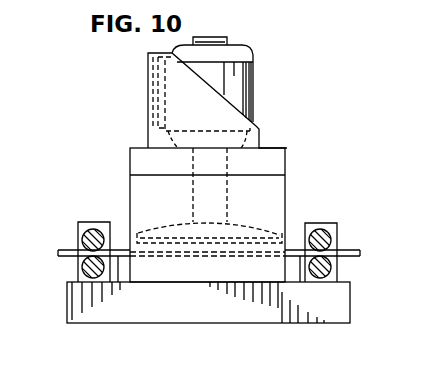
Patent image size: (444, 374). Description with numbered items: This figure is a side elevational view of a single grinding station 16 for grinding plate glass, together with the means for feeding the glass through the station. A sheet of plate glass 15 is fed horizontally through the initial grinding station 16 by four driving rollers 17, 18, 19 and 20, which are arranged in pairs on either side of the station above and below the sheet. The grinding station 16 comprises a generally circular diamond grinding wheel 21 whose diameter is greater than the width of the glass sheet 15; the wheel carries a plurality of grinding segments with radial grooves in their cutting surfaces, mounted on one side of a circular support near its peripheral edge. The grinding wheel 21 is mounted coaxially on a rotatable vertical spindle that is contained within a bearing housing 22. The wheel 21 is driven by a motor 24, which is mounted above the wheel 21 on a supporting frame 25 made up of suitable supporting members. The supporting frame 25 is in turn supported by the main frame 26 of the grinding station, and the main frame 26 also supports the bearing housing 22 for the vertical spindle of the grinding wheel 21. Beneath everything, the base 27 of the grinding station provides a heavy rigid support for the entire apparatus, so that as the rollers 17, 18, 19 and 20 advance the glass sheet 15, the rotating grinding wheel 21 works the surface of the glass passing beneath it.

The sheet of plate glass 15 is at (72, 252).
The grinding station 16 is at (274, 141).
The driving roller 17 is at (344, 228).
The driving roller 18 is at (315, 205).
The driving roller 19 is at (91, 229).
The driving roller 20 is at (82, 268).
The diamond grinding wheel 21 is at (243, 227).
The bearing housing 22 is at (192, 197).
The motor 24 is at (244, 56).
The supporting frame 25 is at (148, 91).
The main frame 26 is at (145, 155).
The base 27 is at (235, 323).